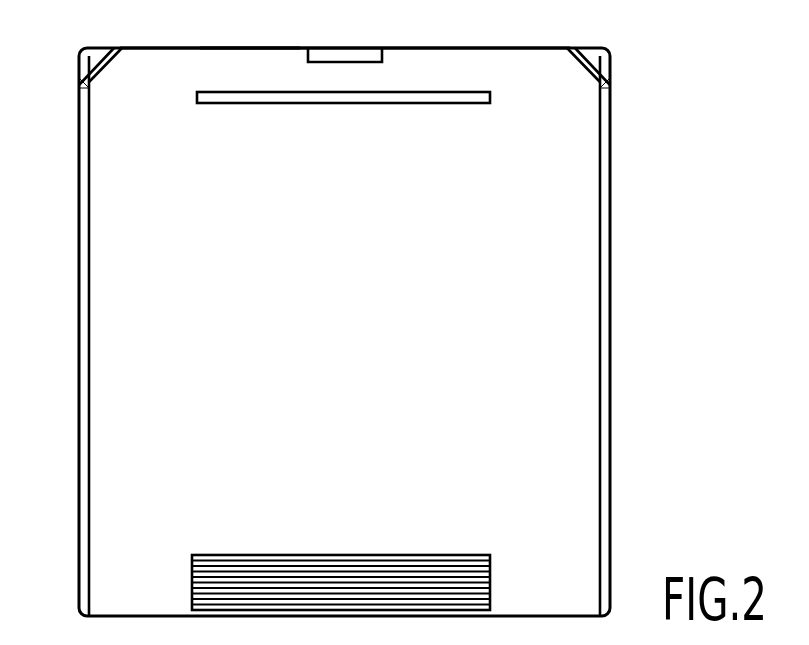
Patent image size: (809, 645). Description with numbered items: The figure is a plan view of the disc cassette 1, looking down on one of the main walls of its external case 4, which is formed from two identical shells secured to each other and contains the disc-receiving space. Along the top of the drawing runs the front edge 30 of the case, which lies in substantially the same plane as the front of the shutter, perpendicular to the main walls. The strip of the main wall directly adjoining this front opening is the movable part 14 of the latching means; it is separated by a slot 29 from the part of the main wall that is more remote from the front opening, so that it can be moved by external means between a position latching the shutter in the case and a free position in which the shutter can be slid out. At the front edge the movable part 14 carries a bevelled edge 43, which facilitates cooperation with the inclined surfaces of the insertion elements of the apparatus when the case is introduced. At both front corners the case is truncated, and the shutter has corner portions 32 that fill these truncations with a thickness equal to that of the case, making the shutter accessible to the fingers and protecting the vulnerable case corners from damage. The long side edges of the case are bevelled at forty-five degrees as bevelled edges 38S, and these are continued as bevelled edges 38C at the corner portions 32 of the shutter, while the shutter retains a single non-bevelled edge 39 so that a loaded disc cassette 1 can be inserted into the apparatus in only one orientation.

The disc cassette 1 is at (610, 340).
The external case 4 is at (122, 502).
The movable parts 14 is at (280, 70).
The slot 29 is at (274, 97).
The front edges 30 is at (166, 47).
The corner portions 32 is at (102, 46).
The bevelled edges 38C is at (83, 63).
The bevelled edges 38S is at (82, 279).
The edge 39 is at (612, 72).
The bevelled edges 43 is at (337, 55).